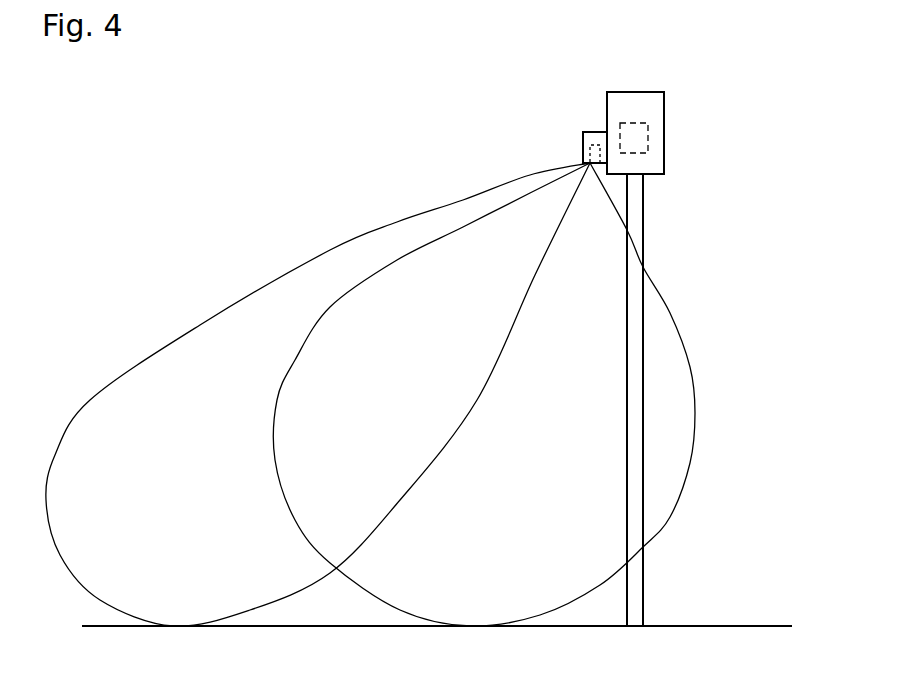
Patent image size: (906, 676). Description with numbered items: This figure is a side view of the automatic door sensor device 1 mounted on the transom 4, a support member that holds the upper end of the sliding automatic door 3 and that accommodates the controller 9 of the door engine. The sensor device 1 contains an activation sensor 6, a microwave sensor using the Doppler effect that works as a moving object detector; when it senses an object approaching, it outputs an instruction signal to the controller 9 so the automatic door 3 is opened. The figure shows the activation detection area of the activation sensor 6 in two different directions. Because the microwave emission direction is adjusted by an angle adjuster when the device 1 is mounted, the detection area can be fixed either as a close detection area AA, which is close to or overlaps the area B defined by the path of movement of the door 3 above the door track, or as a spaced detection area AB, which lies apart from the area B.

The automatic door sensor device 1 is at (588, 131).
The automatic door 3 is at (632, 204).
The transom 4 is at (631, 92).
The activation sensor 6 is at (581, 152).
The controller 9 is at (648, 137).
The close detection area AA is at (670, 313).
The spaced detection area AB is at (120, 372).
The area vertically above the door track B is at (642, 593).